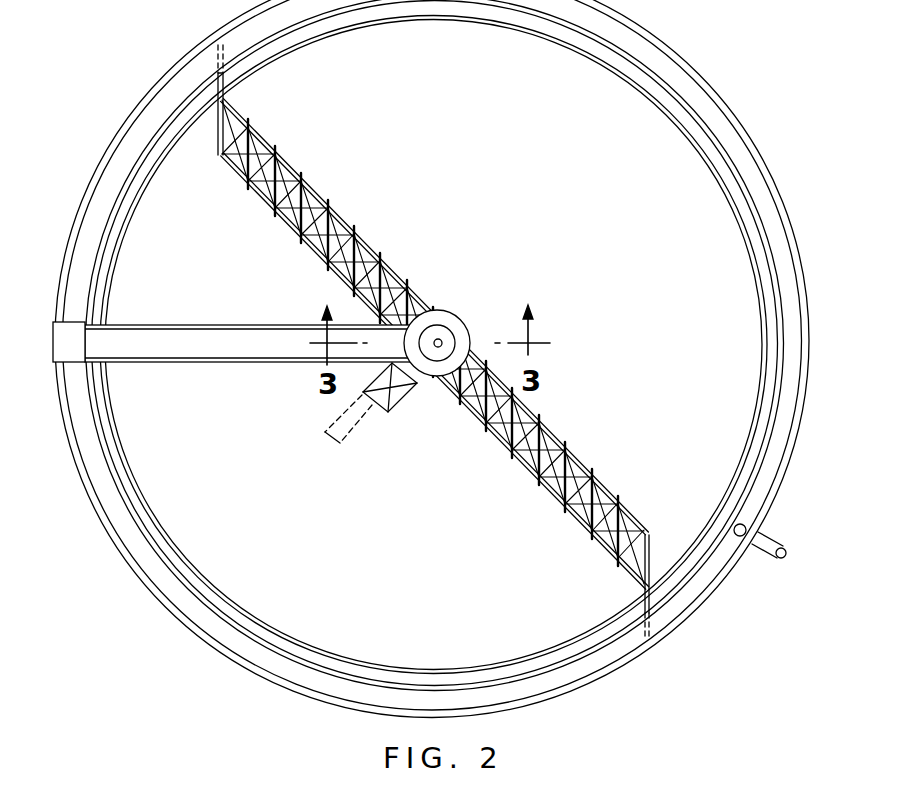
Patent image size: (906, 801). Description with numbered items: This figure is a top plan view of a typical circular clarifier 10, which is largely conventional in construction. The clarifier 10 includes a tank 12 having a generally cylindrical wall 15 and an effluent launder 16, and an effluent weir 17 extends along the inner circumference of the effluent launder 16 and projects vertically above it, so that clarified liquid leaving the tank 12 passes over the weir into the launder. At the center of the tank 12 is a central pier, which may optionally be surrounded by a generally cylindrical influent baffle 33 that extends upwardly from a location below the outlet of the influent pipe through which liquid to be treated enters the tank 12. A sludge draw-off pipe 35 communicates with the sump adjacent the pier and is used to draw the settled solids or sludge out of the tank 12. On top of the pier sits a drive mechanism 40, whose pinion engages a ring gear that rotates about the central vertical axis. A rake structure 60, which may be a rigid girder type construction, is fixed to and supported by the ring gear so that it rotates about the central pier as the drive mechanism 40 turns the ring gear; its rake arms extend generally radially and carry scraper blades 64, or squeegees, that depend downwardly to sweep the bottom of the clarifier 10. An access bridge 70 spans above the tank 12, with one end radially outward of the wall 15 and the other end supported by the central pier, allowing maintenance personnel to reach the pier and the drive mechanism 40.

The clarifier 10 is at (722, 80).
The tank 12 is at (777, 198).
The cylindrical wall 15 is at (740, 133).
The effluent launder 16 is at (683, 600).
The weir 17 is at (512, 667).
The influent baffle 33 is at (437, 380).
The sludge draw-off pipe 35 is at (333, 437).
The drive mechanism 40 is at (447, 337).
The rake structure 60 is at (276, 150).
The scraper blade 64 is at (328, 205).
The access bridge 70 is at (253, 337).